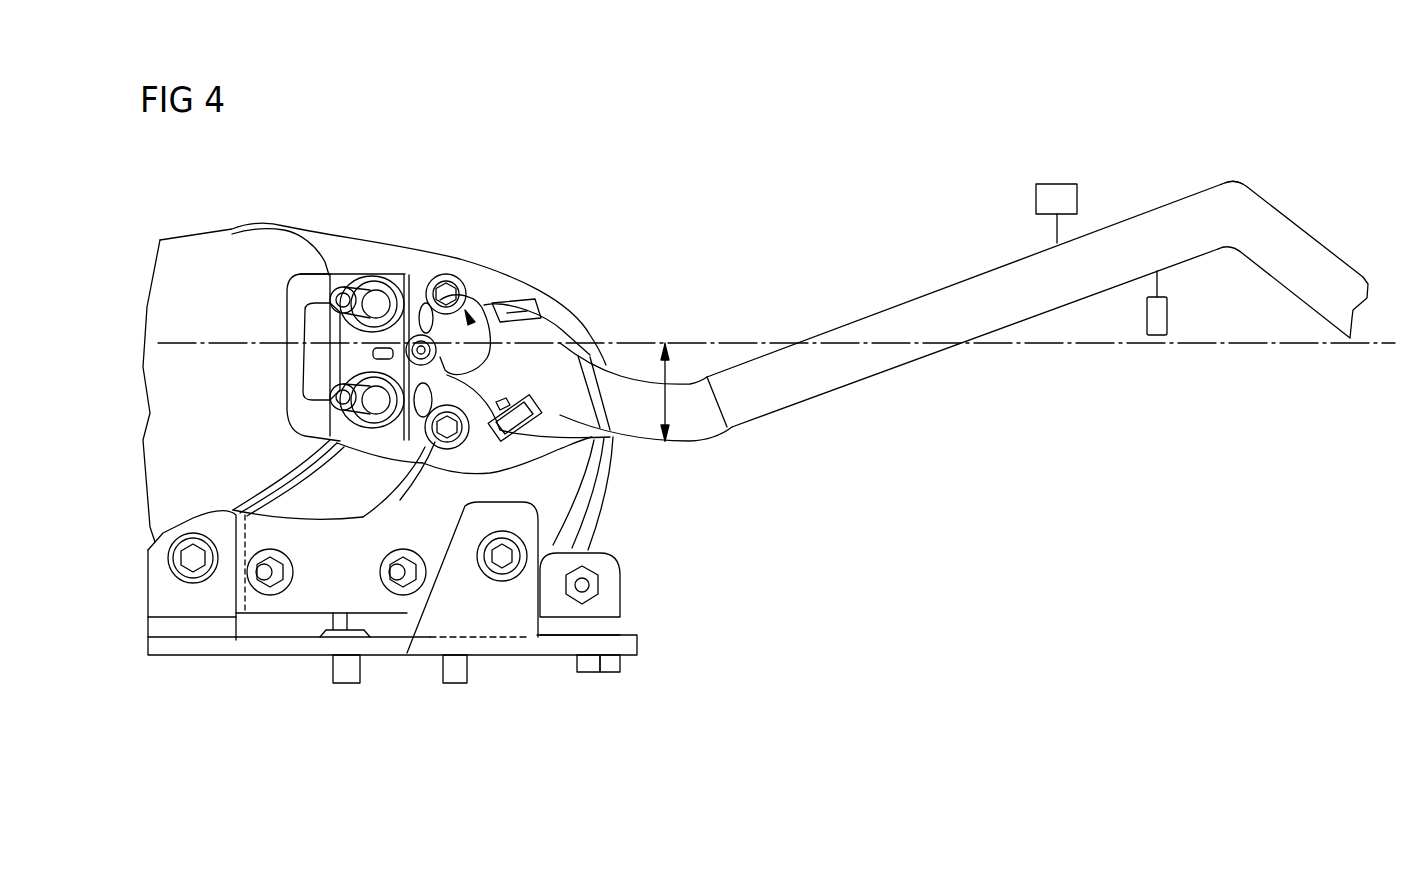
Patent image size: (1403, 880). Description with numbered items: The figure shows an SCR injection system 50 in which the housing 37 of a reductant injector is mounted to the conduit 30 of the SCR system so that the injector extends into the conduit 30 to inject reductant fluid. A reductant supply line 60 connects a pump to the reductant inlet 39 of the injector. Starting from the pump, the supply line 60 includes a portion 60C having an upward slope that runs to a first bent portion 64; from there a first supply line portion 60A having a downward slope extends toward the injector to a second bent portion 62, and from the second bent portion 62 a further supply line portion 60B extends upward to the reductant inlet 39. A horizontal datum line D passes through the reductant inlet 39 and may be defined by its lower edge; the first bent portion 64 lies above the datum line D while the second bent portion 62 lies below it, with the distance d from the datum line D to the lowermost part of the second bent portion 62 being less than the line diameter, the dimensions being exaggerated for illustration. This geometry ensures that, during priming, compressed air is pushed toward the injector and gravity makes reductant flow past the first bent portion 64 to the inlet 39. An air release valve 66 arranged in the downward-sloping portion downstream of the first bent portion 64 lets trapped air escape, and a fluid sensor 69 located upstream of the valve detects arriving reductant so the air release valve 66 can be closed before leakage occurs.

The conduit 30 is at (228, 247).
The SCR injection system 50 is at (423, 332).
The housing 37 is at (418, 279).
The reductant inlet 39 is at (488, 300).
The reductant supply line 60 is at (964, 318).
The first supply line portion 60A is at (968, 346).
The further supply line portion 60B is at (613, 360).
The supply line portion having an upward slope 60C is at (1297, 297).
The second bent portion 62 is at (668, 444).
The first bent portion 64 is at (1228, 182).
The air release valve 66 is at (1060, 184).
The fluid sensor 69 is at (1147, 316).
The datum line D is at (1378, 346).
The distance d is at (668, 398).